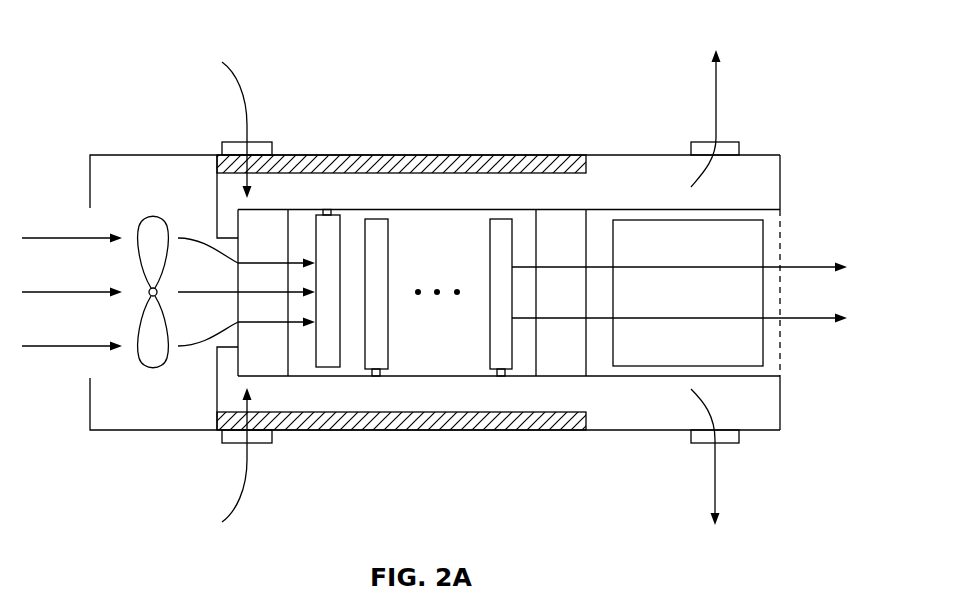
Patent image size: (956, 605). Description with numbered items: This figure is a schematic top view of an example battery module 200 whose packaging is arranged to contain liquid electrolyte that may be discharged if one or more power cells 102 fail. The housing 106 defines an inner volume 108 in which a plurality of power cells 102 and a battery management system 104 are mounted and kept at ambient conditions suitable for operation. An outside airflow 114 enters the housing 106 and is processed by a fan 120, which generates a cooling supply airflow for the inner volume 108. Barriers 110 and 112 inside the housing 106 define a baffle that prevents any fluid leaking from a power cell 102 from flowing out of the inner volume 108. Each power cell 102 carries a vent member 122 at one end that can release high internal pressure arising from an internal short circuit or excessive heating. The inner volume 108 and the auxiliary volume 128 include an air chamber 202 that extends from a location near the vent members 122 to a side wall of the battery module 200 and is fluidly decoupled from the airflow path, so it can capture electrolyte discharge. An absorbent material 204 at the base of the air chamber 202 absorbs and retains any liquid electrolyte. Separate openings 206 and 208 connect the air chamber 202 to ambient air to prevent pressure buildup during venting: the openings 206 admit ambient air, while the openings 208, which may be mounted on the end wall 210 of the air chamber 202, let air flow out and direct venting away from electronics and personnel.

The battery module 200 is at (137, 30).
The air chamber 202 is at (660, 167).
The absorbent material 204 is at (535, 418).
The openings 206 is at (222, 147).
The openings 208 is at (740, 149).
The end wall 210 is at (780, 183).
The housing 106 is at (525, 155).
The auxiliary volume 128 is at (782, 243).
The barrier 110 is at (282, 246).
The barrier 112 is at (580, 248).
The inner volume 108 is at (458, 248).
The power cell 102 is at (325, 362).
The vent member 122 is at (500, 372).
The battery management system 104 is at (745, 251).
The fan 120 is at (156, 218).
The outside airflow 114 is at (90, 290).